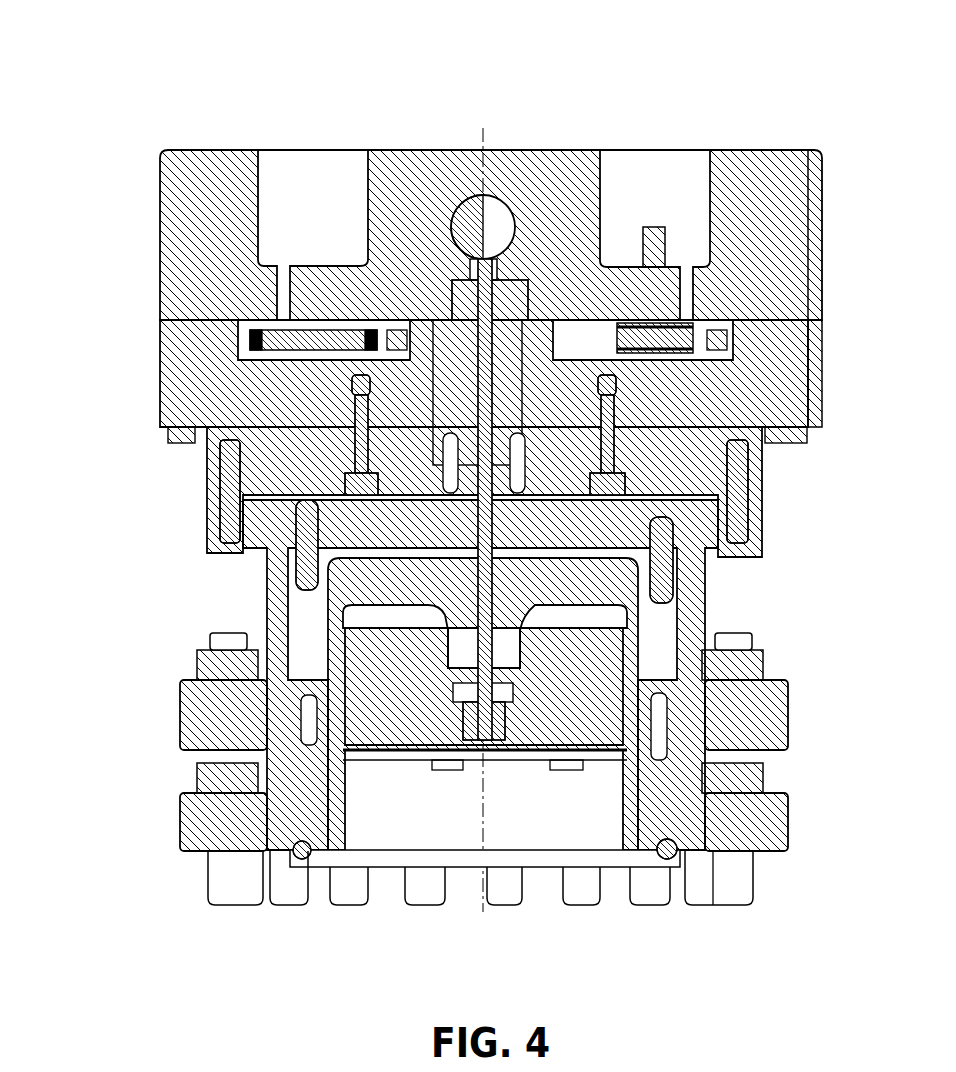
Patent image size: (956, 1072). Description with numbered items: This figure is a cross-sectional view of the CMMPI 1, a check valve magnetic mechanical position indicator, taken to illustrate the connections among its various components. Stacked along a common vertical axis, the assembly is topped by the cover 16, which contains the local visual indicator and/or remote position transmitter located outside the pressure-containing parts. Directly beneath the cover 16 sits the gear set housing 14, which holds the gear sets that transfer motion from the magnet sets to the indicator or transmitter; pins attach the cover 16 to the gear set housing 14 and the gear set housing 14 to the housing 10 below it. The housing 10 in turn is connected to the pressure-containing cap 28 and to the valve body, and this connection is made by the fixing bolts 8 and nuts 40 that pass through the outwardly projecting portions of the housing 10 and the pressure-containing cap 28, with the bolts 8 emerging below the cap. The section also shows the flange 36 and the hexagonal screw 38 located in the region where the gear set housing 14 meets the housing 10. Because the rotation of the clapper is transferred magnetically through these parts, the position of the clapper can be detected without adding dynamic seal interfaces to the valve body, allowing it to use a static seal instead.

The CMMPI 1 is at (208, 57).
The cover 16 is at (158, 212).
The gear set housing 14 is at (158, 365).
The flange 36 is at (205, 466).
The hexagonal screw 38 is at (218, 553).
The nuts 40 is at (197, 651).
The housing 10 is at (180, 714).
The pressure-containing cap 28 is at (180, 824).
The fixing bolts 8 is at (210, 897).